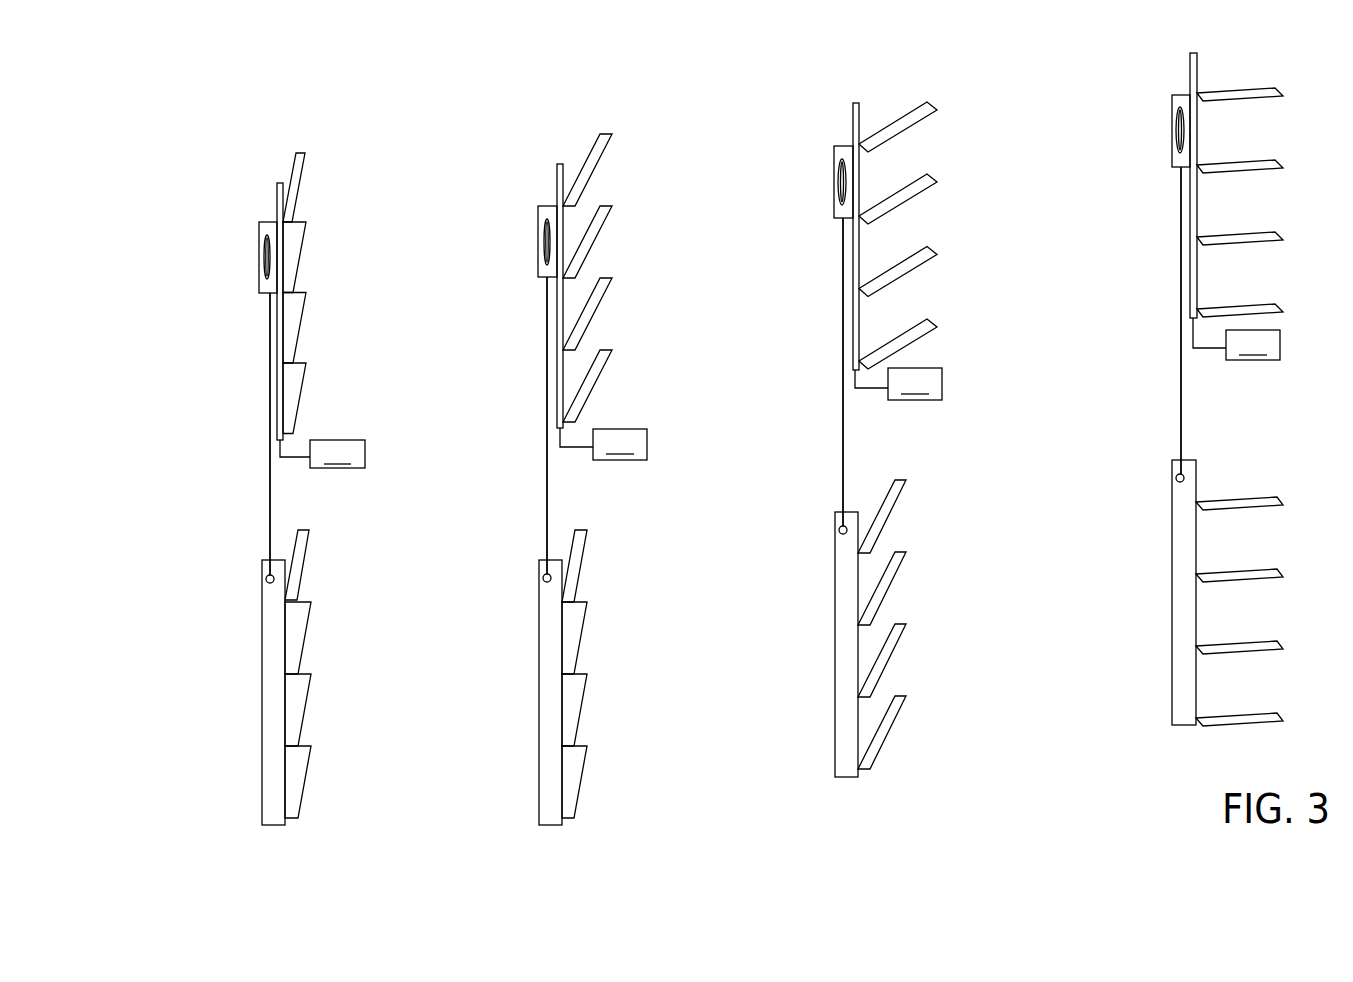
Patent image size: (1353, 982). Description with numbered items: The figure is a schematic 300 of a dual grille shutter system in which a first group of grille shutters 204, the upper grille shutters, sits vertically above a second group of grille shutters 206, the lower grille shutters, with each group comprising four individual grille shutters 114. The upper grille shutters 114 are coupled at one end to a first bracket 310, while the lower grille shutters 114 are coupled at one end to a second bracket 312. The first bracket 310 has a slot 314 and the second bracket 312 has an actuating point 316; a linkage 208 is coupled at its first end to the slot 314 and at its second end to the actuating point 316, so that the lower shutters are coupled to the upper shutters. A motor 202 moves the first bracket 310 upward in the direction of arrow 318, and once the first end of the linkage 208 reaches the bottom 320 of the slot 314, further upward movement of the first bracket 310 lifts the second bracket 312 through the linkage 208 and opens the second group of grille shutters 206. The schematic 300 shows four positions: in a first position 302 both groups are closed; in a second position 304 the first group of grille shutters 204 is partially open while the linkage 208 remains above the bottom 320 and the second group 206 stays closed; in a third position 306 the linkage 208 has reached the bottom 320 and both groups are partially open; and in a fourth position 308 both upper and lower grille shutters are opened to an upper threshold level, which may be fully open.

The grille shutter 114 is at (301, 152).
The motor 202 is at (780, 393).
The first group of grille shutters 204 is at (215, 310).
The second group of grille shutters 206 is at (200, 668).
The linkage 208 is at (265, 467).
The schematic 300 is at (256, 84).
The first position 302 is at (225, 800).
The second position 304 is at (492, 797).
The third position 306 is at (780, 780).
The fourth position 308 is at (1153, 755).
The first bracket 310 is at (277, 197).
The second bracket 312 is at (262, 650).
The slot 314 is at (266, 237).
The actuating point 316 is at (266, 579).
The arrow 318 is at (175, 407).
The bottom of the slot 320 is at (267, 280).